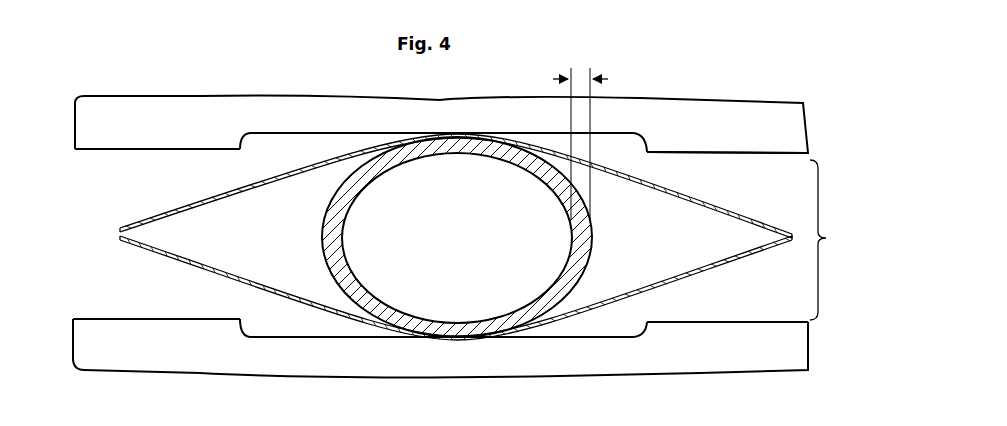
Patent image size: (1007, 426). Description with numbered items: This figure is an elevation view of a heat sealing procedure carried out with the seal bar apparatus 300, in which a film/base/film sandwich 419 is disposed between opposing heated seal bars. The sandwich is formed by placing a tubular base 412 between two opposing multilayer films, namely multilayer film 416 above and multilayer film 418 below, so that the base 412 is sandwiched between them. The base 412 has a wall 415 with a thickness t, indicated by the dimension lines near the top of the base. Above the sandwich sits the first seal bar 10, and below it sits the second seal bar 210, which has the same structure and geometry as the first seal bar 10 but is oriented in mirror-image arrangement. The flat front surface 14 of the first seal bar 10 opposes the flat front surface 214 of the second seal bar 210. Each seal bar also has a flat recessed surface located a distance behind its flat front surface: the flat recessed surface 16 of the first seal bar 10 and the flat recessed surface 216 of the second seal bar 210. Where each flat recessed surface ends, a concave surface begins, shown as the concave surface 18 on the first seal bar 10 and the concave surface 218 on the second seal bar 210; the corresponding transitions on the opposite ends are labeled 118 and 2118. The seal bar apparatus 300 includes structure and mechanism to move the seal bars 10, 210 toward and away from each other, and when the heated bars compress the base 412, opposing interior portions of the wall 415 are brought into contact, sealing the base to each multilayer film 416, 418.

The seal bar apparatus 300 is at (726, 76).
The first seal bar 10 is at (83, 120).
The flat front surface 14 is at (108, 150).
The upper plate step 118 is at (234, 129).
The flat recessed surface 16 is at (292, 140).
The concave surface 18 is at (650, 128).
The thickness t is at (590, 68).
The multilayer film 416 is at (697, 200).
The multilayer film 418 is at (741, 262).
The wall 415 is at (592, 280).
The base 412 is at (378, 295).
The film/base/film sandwich 419 is at (826, 238).
The second seal bar 210 is at (90, 352).
The flat front surface 214 is at (113, 318).
The lower plate step 2118 is at (237, 337).
The flat recessed surface 216 is at (306, 336).
The concave surface 218 is at (646, 342).